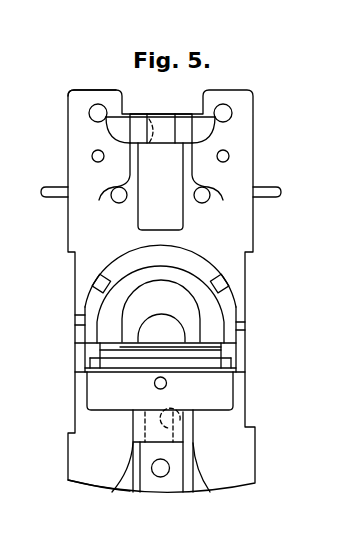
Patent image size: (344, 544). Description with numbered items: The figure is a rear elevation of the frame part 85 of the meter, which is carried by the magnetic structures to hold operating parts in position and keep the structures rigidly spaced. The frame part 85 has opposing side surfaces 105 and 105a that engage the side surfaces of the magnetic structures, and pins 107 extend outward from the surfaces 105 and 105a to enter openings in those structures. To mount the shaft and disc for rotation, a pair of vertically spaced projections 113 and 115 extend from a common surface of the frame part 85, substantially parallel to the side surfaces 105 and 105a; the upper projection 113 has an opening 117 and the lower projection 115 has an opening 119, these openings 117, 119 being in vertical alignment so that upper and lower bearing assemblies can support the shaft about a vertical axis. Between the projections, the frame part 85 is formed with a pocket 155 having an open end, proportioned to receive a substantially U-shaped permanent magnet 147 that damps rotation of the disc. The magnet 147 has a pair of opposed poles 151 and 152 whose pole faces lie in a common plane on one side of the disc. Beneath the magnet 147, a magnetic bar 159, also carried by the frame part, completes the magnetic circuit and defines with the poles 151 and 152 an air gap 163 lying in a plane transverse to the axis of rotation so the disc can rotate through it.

The frame part 85 is at (289, 99).
The side surface 105 is at (255, 137).
The side surface 105a is at (68, 101).
The pins 107 is at (270, 188).
The projection 113 is at (167, 119).
The opening 117 is at (148, 120).
The pocket 155 is at (225, 316).
The pole 151 is at (121, 328).
The pole 152 is at (201, 320).
The permanent magnet 147 is at (215, 328).
The air gap 163 is at (217, 346).
The magnetic bar 159 is at (217, 356).
The opening 119 is at (165, 412).
The projection 115 is at (182, 429).